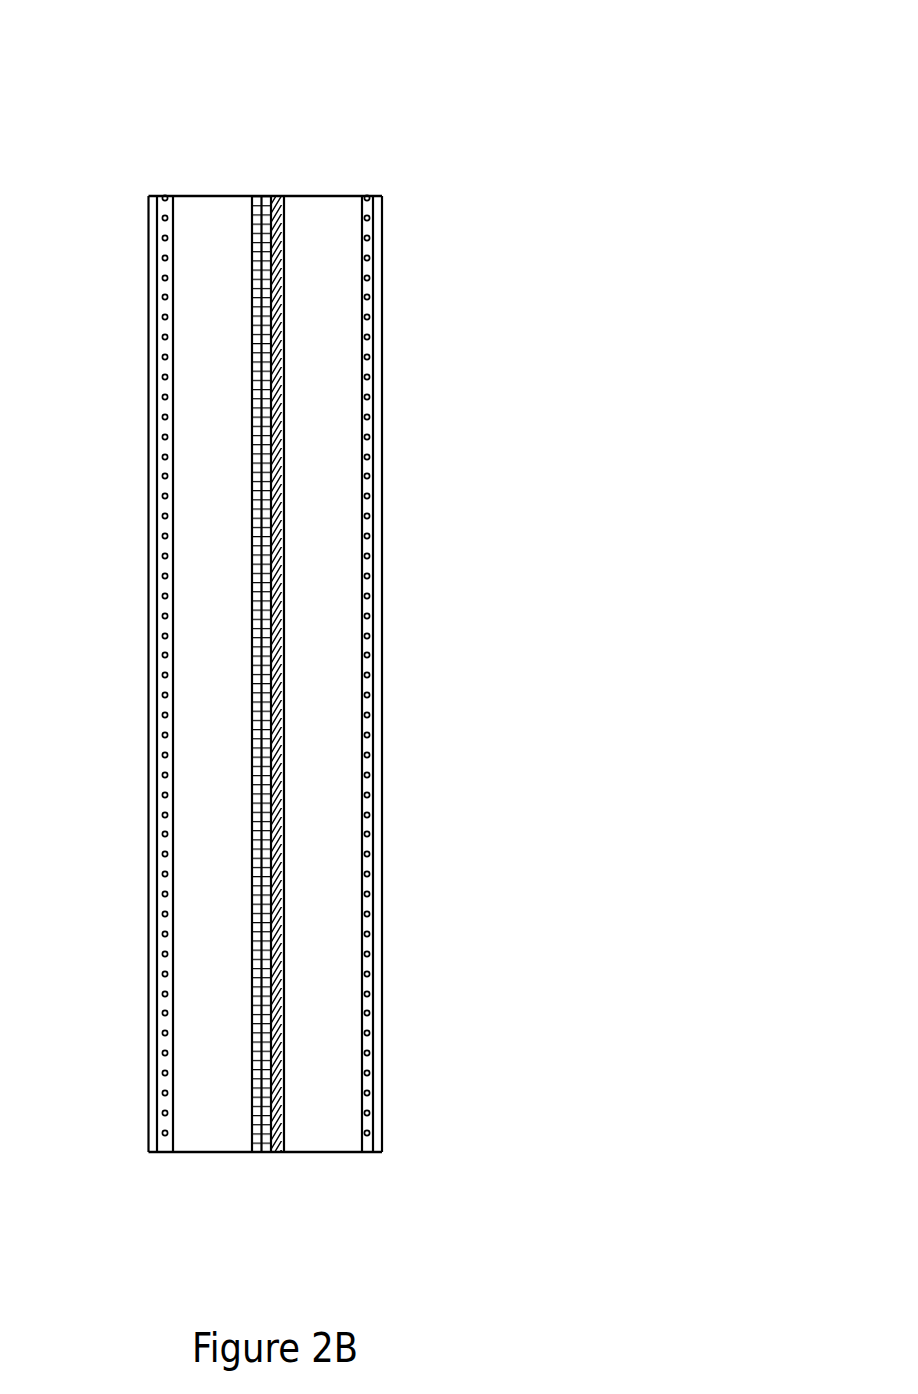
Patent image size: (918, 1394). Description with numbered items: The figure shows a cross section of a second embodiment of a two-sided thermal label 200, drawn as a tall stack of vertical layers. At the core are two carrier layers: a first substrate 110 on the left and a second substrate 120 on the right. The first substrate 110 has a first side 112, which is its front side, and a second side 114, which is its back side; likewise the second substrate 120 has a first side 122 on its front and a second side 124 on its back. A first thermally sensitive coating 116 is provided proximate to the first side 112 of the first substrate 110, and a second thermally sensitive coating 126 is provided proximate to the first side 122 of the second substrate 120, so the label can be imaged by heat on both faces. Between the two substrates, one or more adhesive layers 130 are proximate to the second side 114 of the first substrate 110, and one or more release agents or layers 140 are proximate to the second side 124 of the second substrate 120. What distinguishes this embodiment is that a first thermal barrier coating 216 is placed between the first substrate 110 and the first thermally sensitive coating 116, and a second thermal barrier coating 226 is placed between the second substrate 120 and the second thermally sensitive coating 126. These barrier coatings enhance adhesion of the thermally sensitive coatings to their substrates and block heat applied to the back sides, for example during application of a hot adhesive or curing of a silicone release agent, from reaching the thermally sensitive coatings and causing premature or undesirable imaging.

The two-sided thermal label 200 is at (410, 67).
The first substrate 110 is at (192, 248).
The second substrate 120 is at (302, 248).
The first side of the first substrate 112 is at (173, 187).
The second side of the first substrate 114 is at (253, 188).
The first thermally sensitive coating 116 is at (146, 237).
The first side of the second substrate 122 is at (362, 178).
The second side of the second substrate 124 is at (284, 188).
The second thermally sensitive coating 126 is at (385, 237).
The adhesive layer 130 is at (263, 1155).
The release agent layer 140 is at (277, 1155).
The first thermal barrier coating 216 is at (165, 1155).
The second thermal barrier coating 226 is at (367, 1155).